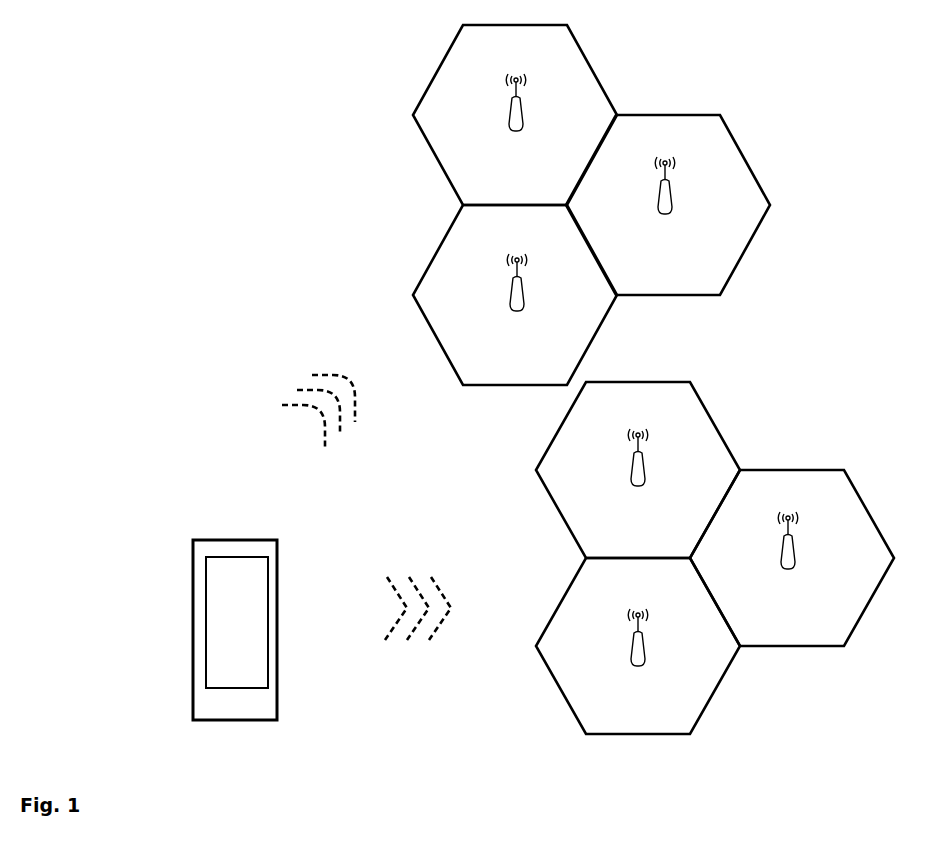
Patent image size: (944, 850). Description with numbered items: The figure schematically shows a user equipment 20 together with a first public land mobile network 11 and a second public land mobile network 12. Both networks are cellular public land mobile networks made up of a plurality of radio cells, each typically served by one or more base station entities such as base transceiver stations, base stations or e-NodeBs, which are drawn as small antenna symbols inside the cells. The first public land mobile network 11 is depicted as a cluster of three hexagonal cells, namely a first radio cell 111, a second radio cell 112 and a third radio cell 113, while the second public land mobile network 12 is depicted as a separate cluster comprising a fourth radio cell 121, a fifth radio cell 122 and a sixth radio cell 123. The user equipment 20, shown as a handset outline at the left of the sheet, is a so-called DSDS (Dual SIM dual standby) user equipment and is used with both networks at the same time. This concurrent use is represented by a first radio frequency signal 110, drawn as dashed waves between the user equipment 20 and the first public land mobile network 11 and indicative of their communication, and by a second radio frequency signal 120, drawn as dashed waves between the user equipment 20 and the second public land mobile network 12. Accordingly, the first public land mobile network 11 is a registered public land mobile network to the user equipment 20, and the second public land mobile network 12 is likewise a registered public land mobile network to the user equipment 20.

The first public land mobile network 11 is at (684, 102).
The second public land mobile network 12 is at (797, 448).
The user equipment 20 is at (235, 620).
The first radio frequency signal 110 is at (300, 403).
The second radio frequency signal 120 is at (418, 599).
The first radio cell 111 is at (515, 115).
The second radio cell 112 is at (668, 205).
The third radio cell 113 is at (515, 295).
The fourth radio cell 121 is at (638, 470).
The fifth radio cell 122 is at (792, 558).
The sixth radio cell 123 is at (638, 646).